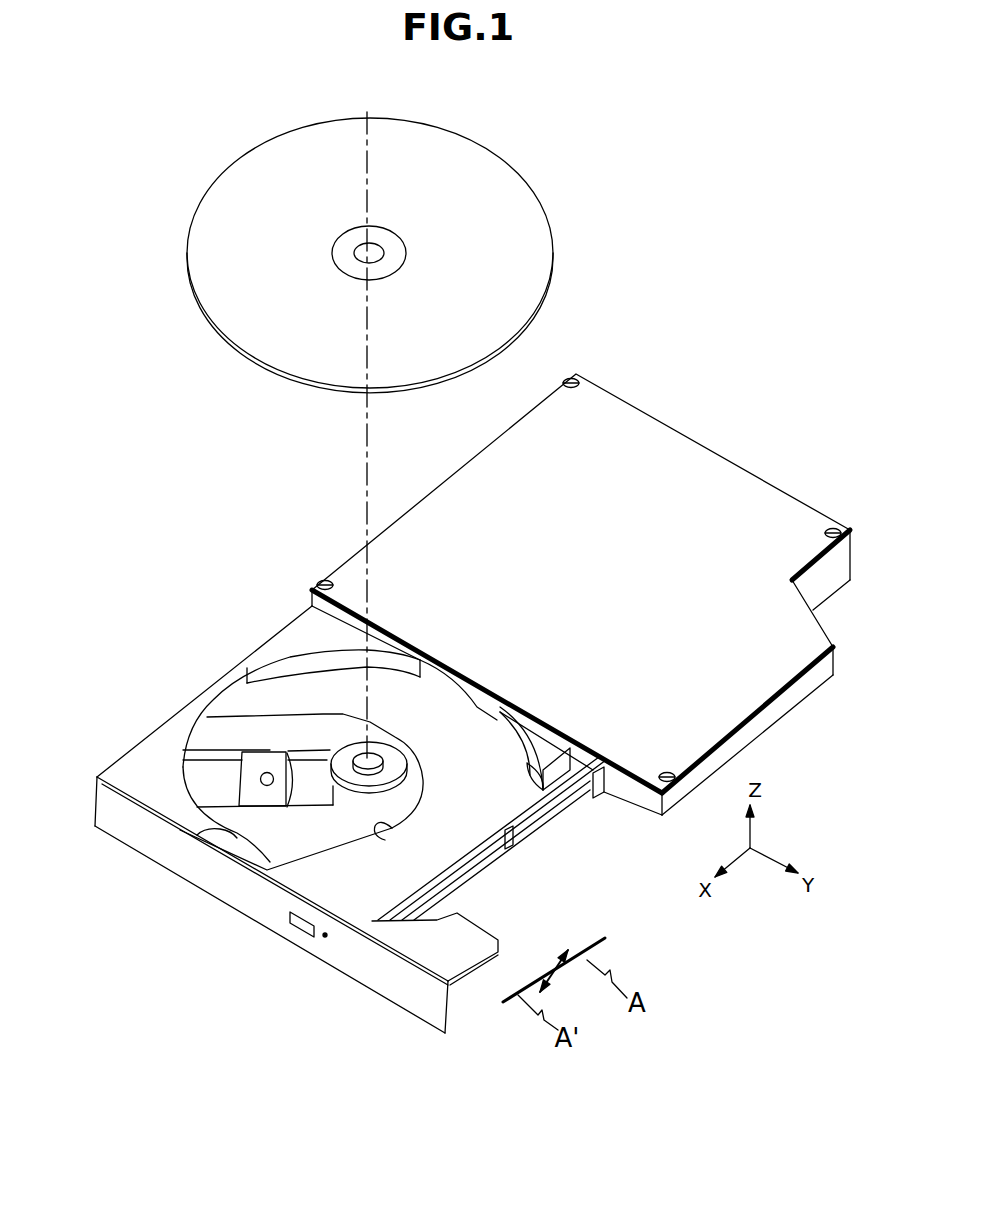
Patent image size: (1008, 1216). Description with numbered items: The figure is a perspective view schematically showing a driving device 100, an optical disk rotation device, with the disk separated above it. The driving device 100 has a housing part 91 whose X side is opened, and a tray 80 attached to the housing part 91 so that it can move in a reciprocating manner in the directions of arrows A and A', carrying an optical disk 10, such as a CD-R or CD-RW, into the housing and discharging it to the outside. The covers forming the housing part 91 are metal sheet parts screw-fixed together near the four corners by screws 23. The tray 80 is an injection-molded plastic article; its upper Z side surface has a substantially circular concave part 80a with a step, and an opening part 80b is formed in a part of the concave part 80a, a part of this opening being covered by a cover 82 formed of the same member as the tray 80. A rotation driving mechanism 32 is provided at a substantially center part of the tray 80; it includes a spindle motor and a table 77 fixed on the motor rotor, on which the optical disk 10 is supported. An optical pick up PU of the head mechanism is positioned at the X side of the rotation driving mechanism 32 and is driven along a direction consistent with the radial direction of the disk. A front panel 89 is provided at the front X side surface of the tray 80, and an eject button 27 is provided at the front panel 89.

The optical disk 10 is at (379, 255).
The driving device 100 is at (723, 268).
The housing part 91 is at (581, 589).
The screws 23 is at (848, 520).
The rotation driving mechanism 32 is at (326, 675).
The table 77 is at (301, 744).
The optical pick up PU is at (232, 725).
The tray 80 is at (359, 795).
The concave part 80a is at (560, 801).
The opening part 80b is at (390, 828).
The cover 82 is at (139, 853).
The front panel 89 is at (271, 905).
The eject button 27 is at (290, 954).